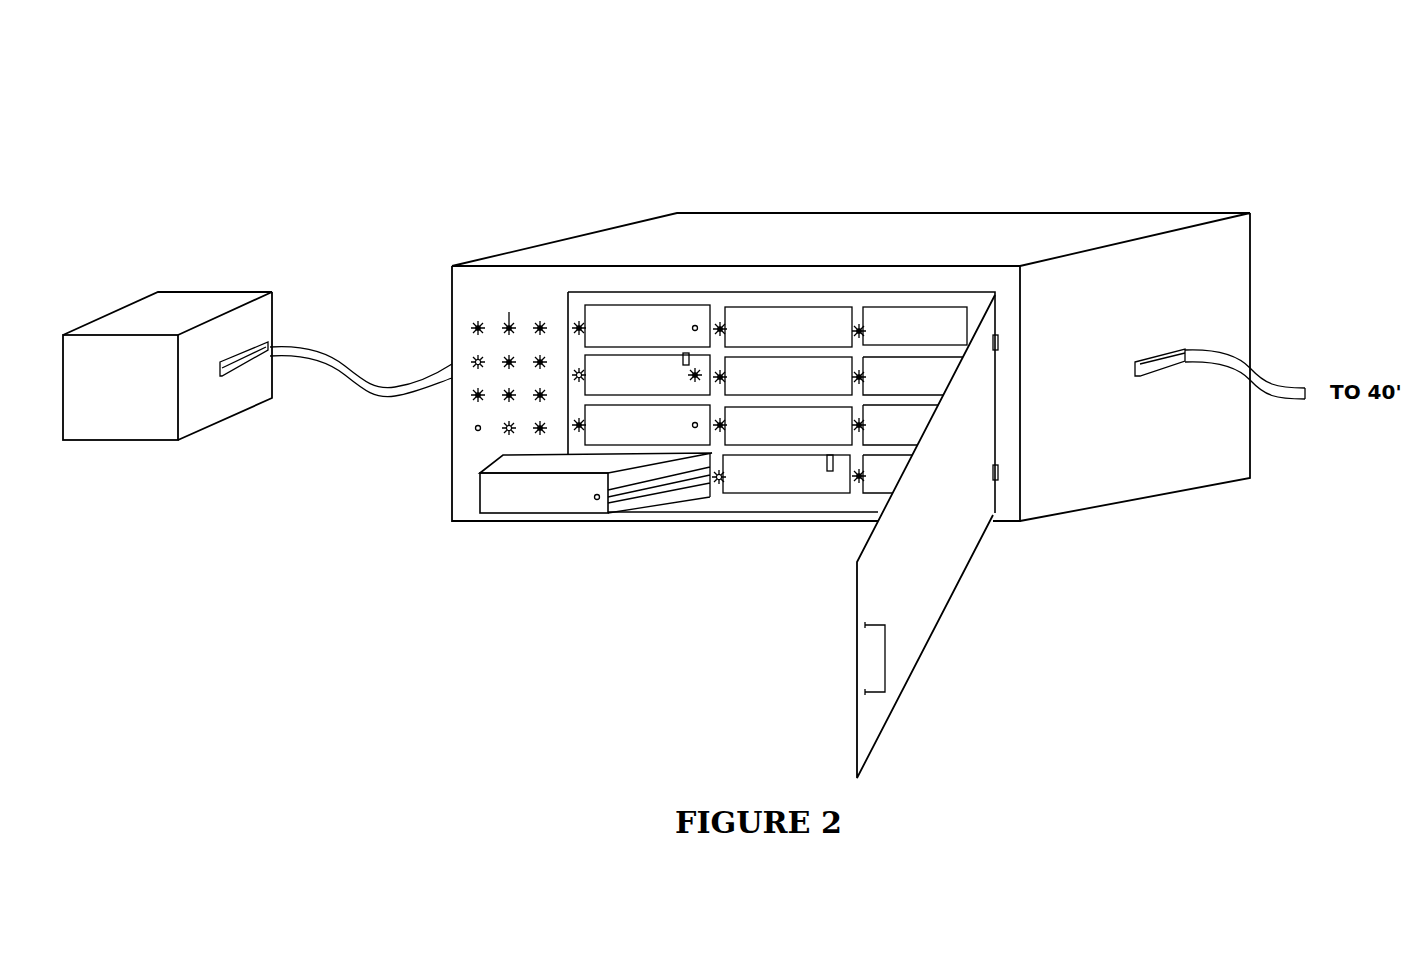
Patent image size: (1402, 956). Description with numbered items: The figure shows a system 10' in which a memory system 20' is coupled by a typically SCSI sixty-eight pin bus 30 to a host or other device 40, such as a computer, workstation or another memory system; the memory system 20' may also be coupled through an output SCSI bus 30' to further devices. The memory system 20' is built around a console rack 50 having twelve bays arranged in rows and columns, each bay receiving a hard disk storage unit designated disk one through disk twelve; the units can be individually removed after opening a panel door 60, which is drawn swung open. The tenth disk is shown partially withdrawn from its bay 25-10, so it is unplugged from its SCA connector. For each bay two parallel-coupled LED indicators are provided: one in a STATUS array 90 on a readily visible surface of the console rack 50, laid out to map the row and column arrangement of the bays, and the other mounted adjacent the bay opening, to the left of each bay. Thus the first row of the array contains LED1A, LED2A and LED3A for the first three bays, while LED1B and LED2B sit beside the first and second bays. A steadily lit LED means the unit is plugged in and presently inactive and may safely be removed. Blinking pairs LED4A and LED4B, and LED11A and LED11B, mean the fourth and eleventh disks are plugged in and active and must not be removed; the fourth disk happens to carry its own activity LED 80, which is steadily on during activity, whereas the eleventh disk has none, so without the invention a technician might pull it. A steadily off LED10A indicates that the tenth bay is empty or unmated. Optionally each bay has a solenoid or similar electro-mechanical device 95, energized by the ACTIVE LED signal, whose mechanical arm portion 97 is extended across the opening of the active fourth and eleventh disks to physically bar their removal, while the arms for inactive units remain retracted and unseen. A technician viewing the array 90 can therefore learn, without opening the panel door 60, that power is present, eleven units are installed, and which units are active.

The system 10' is at (242, 80).
The memory system 20' is at (1173, 85).
The SCSI bus 30 is at (361, 390).
The output SCSI bus 30' is at (1244, 414).
The host or other device 40 is at (178, 302).
The console rack 50 is at (815, 222).
The panel door 60 is at (925, 583).
The activity LED 80 is at (697, 370).
The STATUS array 90 is at (462, 343).
The electro-mechanical device 95 is at (756, 395).
The mechanical arm portion 97 is at (686, 353).
The bay 25-10 is at (700, 490).
The status array LED LED1A is at (473, 326).
The status array LED LED2A is at (508, 288).
The status array LED LED3A is at (547, 325).
The status array LED LED4A is at (470, 362).
The status array LED LED10A is at (474, 428).
The status array LED LED11A is at (507, 430).
The bay opening LED LED1B is at (580, 323).
The bay opening LED LED2B is at (722, 320).
The bay opening LED LED4B is at (580, 370).
The bay opening LED LED11B is at (717, 487).